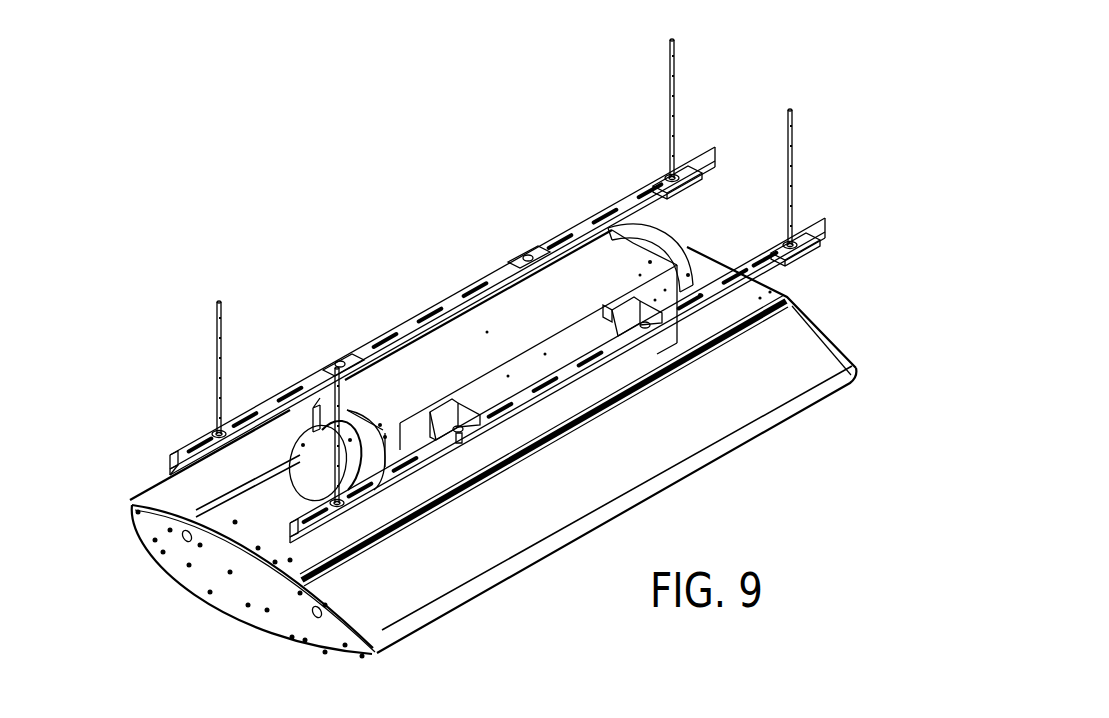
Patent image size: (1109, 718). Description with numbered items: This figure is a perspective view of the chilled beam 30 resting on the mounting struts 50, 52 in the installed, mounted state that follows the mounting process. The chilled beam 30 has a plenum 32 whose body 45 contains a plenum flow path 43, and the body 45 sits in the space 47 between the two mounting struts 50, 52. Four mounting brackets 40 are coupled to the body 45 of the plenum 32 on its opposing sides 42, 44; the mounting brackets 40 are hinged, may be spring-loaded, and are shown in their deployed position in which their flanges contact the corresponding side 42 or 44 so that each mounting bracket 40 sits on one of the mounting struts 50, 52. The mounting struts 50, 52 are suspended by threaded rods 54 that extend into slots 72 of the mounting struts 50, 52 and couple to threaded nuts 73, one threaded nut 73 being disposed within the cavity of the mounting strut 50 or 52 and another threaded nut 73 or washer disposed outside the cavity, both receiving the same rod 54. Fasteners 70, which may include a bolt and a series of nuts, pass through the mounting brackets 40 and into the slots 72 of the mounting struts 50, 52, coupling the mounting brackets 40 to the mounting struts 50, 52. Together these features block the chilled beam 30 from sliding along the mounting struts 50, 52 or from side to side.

The chilled beam 30 is at (733, 476).
The plenum 32 is at (475, 310).
The mounting bracket 40 is at (356, 360).
The side of the body 42 is at (535, 372).
The plenum flow path 43 is at (281, 512).
The side of the body 44 is at (305, 425).
The body 45 is at (420, 350).
The space 47 is at (318, 478).
The mounting strut 50 is at (358, 543).
The mounting strut 52 is at (170, 462).
The rod 54 is at (217, 335).
The fastener 70 is at (335, 362).
The slot 72 is at (440, 452).
The threaded nut 73 is at (203, 424).